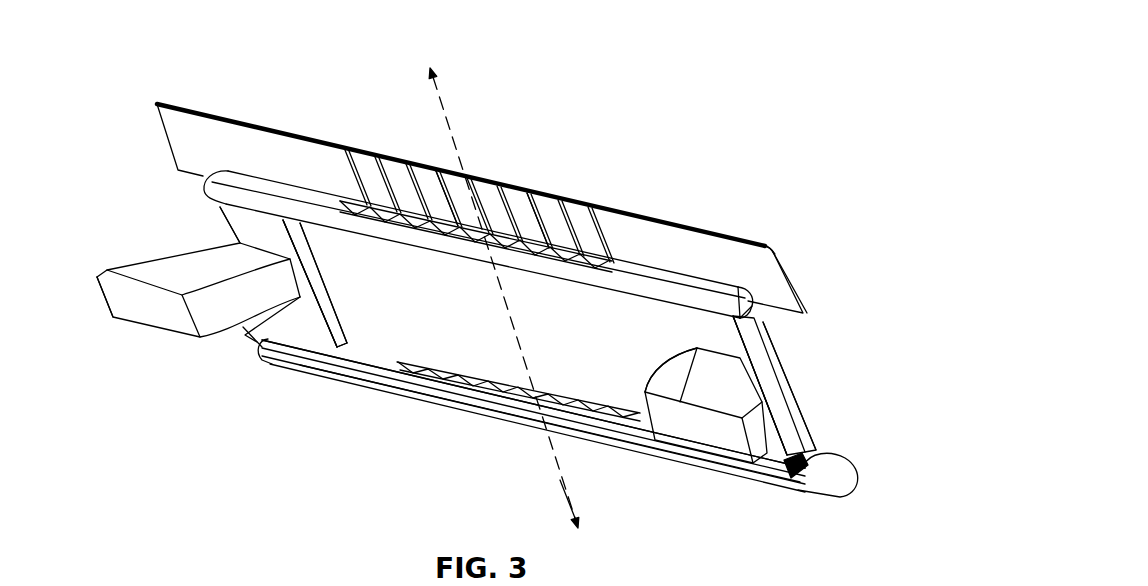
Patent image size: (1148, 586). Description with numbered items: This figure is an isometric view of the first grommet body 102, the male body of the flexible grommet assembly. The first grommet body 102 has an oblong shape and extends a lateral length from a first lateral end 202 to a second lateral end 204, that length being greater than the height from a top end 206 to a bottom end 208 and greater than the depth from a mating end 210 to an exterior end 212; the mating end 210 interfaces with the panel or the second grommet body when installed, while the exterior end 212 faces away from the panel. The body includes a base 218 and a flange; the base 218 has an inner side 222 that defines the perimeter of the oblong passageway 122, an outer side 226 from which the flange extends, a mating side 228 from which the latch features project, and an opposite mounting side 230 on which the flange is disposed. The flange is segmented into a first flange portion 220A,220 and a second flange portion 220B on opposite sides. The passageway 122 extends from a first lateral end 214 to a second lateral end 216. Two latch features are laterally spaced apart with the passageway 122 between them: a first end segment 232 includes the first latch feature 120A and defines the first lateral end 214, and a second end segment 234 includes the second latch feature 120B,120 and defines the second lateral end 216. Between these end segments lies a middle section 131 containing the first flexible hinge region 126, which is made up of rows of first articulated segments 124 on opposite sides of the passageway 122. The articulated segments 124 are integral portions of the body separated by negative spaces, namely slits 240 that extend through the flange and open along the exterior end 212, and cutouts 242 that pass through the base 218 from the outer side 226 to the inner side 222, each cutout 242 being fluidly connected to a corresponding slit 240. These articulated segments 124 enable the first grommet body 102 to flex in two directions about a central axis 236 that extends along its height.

The first grommet body 102 is at (256, 52).
The first latch feature 120A is at (178, 318).
The second latch feature 120B,120 is at (700, 430).
The passageway 122 is at (635, 416).
The first articulated segments 124 is at (540, 213).
The first flexible hinge region 126 is at (512, 188).
The middle section 131 is at (469, 124).
The first lateral end 202 is at (137, 219).
The second lateral end 204 is at (816, 384).
The top end 206 is at (323, 138).
The bottom end 208 is at (363, 404).
The mating end 210 is at (185, 348).
The exterior end 212 is at (700, 203).
The first lateral end of the passageway 214 is at (335, 343).
The second lateral end of the passageway 216 is at (685, 340).
The base 218 is at (240, 200).
The first flange portion 220A,220 is at (765, 265).
The second flange portion 220B is at (830, 466).
The inner side 222 is at (300, 245).
The outer side 226 is at (307, 197).
The mating side 228 is at (303, 323).
The mounting side 230 is at (772, 340).
The first end segment 232 is at (222, 92).
The second end segment 234 is at (747, 218).
The central axis 236 is at (560, 493).
The slits 240 is at (432, 186).
The cutouts 242 is at (441, 232).